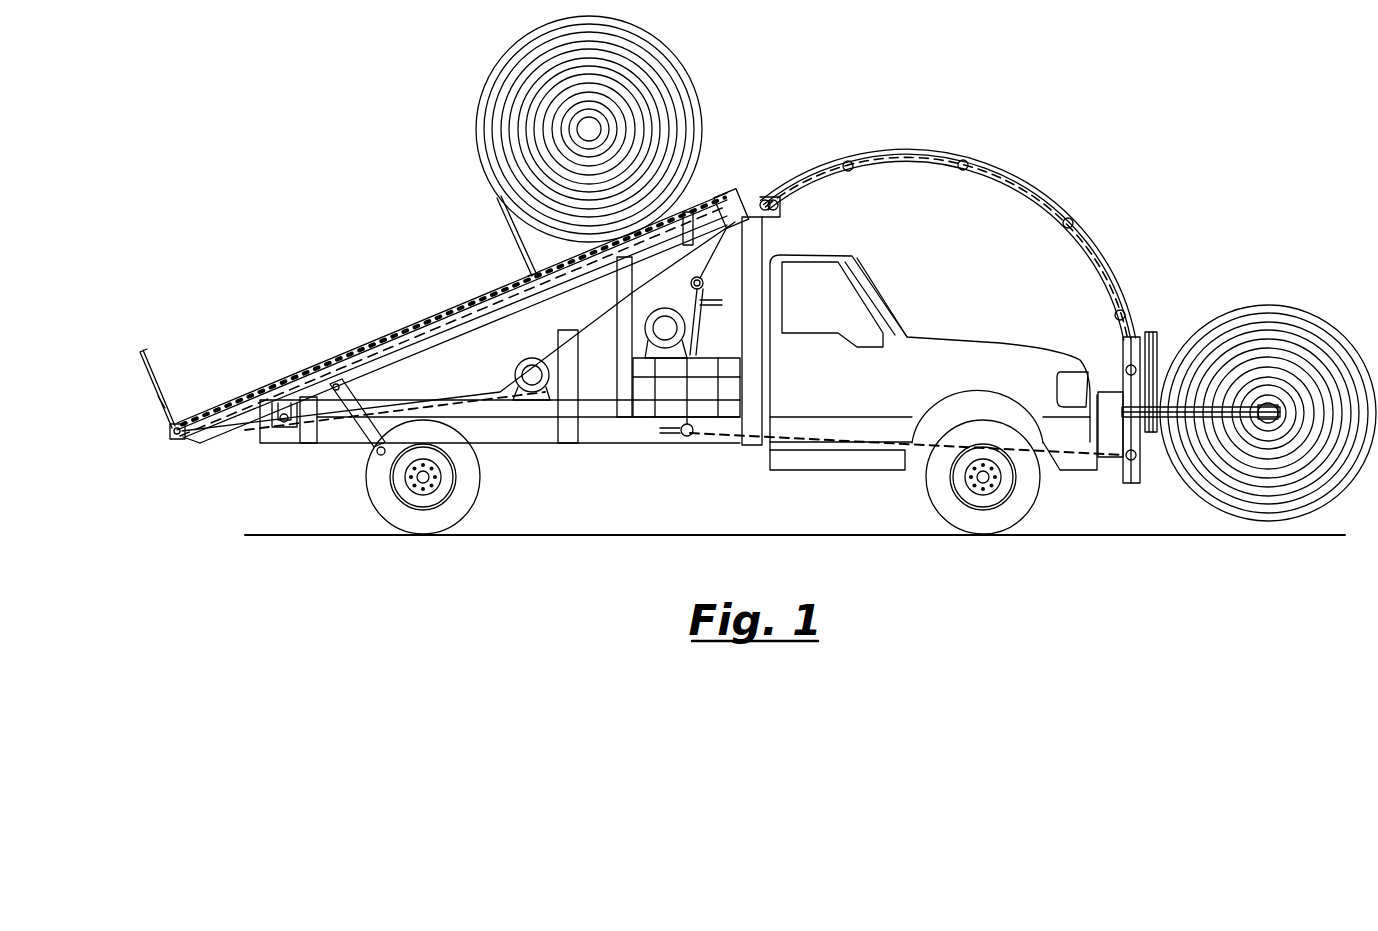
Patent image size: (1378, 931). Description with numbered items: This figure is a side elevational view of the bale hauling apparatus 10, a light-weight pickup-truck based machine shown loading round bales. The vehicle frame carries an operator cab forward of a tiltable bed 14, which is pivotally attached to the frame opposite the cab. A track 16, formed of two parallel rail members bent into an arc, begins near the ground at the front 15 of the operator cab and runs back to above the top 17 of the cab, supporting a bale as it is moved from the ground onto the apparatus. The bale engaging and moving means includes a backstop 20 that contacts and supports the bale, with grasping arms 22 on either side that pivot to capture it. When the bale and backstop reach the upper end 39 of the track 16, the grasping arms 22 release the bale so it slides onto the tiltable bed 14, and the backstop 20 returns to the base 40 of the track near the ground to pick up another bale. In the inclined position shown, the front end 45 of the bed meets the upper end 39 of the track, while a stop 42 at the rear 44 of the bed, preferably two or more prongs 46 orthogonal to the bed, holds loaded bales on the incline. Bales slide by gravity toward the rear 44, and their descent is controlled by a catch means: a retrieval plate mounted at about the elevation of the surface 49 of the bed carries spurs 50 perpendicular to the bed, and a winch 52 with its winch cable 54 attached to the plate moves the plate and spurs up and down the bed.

The bale hauling apparatus 10 is at (338, 163).
The tiltable bed 14 is at (358, 348).
The front of the operator cab 15 is at (691, 373).
The track 16 is at (1000, 165).
The top of the cab 17 is at (830, 258).
The backstop 20 is at (1152, 334).
The grasping arm 22 is at (1240, 410).
The upper end of the track 39 is at (768, 200).
The base of the track 40 is at (1130, 486).
The stop 42 is at (160, 400).
The rear of the bed 44 is at (172, 441).
The front end of the bed 45 is at (742, 192).
The prong 46 is at (140, 366).
The surface of the bed 49 is at (258, 388).
The spur 50 is at (518, 254).
The winch 52 is at (447, 327).
The winch cable 54 is at (484, 390).